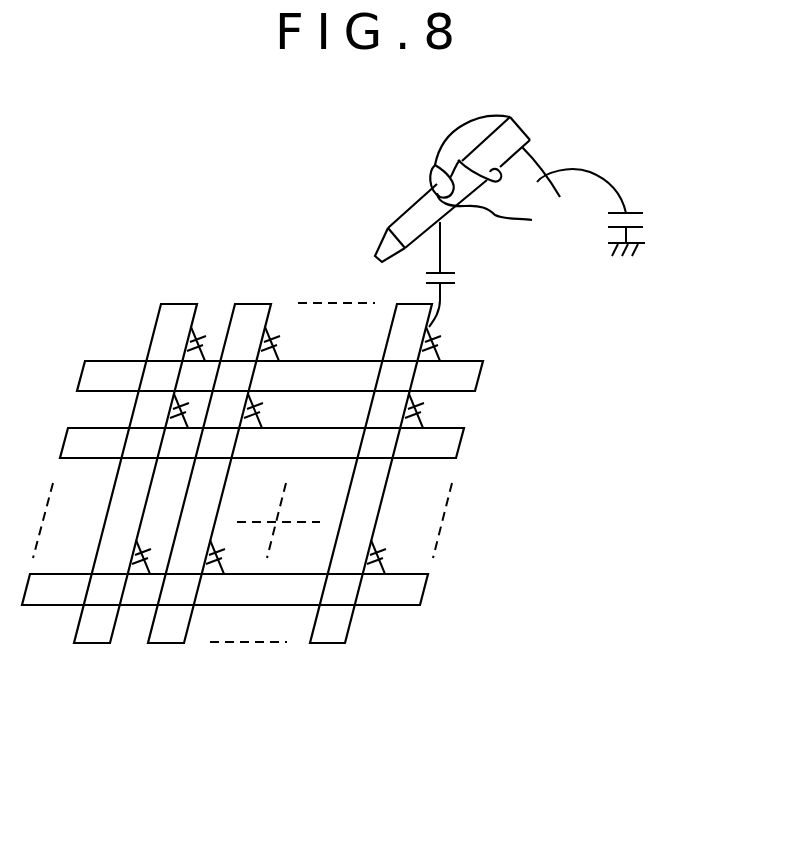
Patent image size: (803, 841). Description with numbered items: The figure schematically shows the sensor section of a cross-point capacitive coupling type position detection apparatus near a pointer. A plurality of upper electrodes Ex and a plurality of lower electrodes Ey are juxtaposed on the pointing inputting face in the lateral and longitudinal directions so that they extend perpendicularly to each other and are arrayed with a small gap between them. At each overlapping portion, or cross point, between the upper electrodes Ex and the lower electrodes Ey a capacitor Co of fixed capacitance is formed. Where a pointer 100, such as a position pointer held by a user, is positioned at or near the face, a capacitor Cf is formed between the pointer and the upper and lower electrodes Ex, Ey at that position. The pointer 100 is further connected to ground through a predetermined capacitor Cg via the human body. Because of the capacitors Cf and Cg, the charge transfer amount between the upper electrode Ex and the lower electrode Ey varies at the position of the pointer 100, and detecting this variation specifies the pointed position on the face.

The pointer 100 is at (400, 210).
The capacitor Cf is at (455, 278).
The capacitor Cg is at (645, 220).
The capacitor Co is at (443, 340).
The upper electrodes Ex is at (92, 632).
The lower electrodes Ey is at (472, 373).